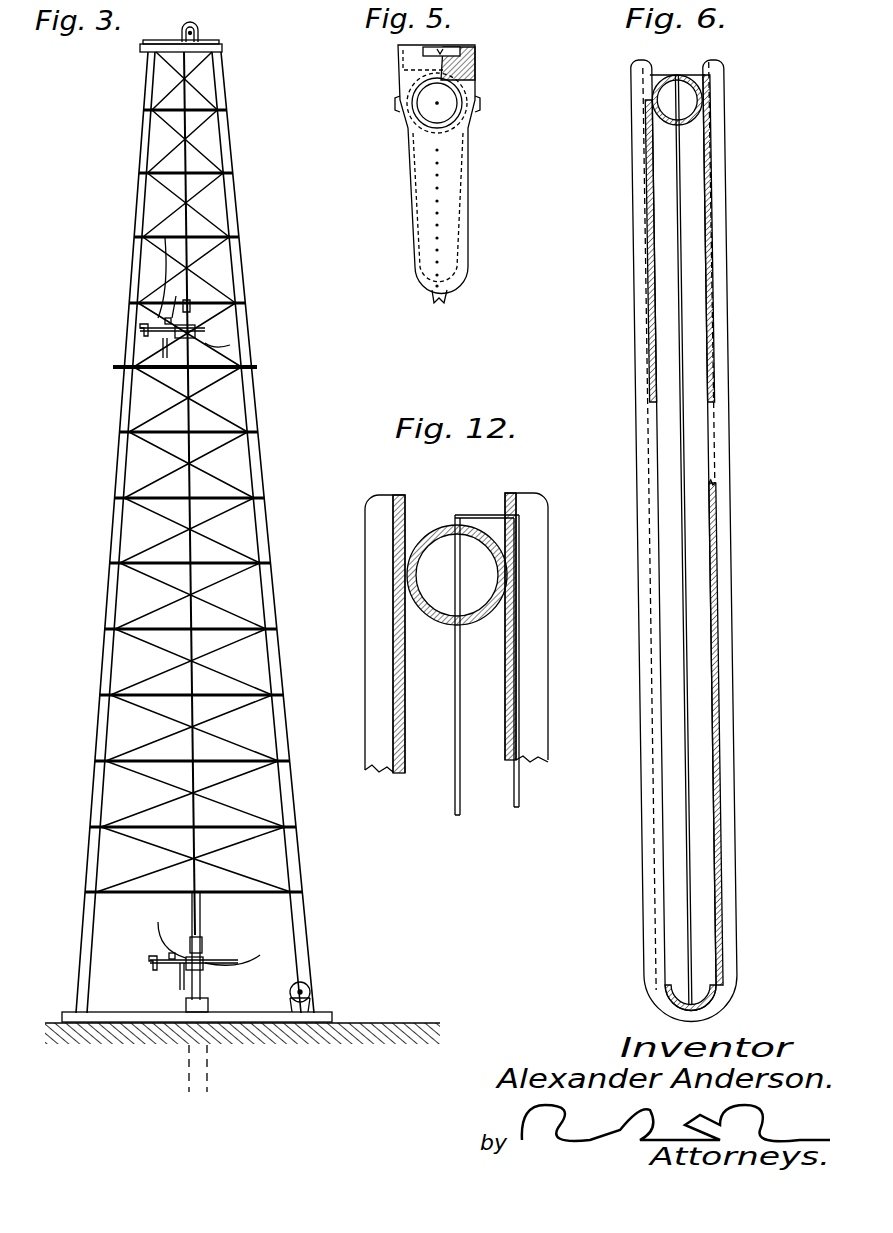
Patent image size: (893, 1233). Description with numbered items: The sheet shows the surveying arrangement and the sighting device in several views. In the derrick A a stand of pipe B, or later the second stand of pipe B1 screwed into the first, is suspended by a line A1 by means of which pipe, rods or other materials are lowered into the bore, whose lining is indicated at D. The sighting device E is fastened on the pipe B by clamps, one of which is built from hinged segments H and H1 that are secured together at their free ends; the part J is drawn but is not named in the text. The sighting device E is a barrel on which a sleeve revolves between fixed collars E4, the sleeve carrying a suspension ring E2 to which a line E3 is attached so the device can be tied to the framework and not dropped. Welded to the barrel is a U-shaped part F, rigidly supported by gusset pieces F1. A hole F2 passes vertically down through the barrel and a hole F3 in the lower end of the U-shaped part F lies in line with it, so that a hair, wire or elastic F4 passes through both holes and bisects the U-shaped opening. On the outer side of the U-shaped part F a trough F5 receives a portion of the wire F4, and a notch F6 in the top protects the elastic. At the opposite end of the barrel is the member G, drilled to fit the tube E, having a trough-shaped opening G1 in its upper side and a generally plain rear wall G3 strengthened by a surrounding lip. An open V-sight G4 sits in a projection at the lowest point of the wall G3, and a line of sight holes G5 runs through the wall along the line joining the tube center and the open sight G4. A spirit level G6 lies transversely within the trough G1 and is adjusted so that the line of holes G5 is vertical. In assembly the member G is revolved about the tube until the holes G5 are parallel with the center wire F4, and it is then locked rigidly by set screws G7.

In FIG. 3, the derrick A is at (252, 404).
In FIG. 3, the line A1 is at (183, 160).
In FIG. 3, the stand of pipe B is at (202, 980).
In FIG. 3, the second stand of pipe B1 is at (190, 482).
In FIG. 3, the lining of the bore hole D is at (210, 1002).
In FIG. 3, the sighting device E is at (207, 342).
In FIG. 5, the sighting device E is at (414, 90).
In FIG. 6, the sighting device E is at (690, 126).
In FIG. 12, the sighting device E is at (439, 616).
In FIG. 3, the suspension ring E2 is at (165, 320).
In FIG. 3, the line E3 is at (162, 272).
In FIG. 3, the collar E4 is at (190, 957).
In FIG. 3, the U-shaped part F is at (163, 352).
In FIG. 6, the U-shaped part F is at (645, 447).
In FIG. 6, the gusset pieces F1 is at (650, 206).
In FIG. 12, the gusset pieces F1 is at (506, 728).
In FIG. 12, the hole F2 is at (446, 527).
In FIG. 6, the hole F3 is at (676, 1003).
In FIG. 6, the wire or elastic F4 is at (680, 360).
In FIG. 12, the wire or elastic F4 is at (517, 797).
In FIG. 6, the trough F5 is at (728, 646).
In FIG. 12, the trough F5 is at (375, 680).
In FIG. 6, the notch F6 is at (716, 62).
In FIG. 12, the notch F6 is at (514, 506).
In FIG. 3, the member G is at (140, 330).
In FIG. 5, the member G is at (470, 176).
In FIG. 5, the trough-shaped opening G1 is at (470, 52).
In FIG. 5, the rear wall G3 is at (452, 237).
In FIG. 5, the open V-sight G4 is at (440, 304).
In FIG. 5, the sight holes G5 is at (434, 213).
In FIG. 5, the level G6 is at (448, 52).
In FIG. 5, the set screws G7 is at (396, 108).
In FIG. 3, the clamp segment H is at (193, 956).
In FIG. 3, the clamp segment H1 is at (198, 328).
In FIG. 3, the lever J is at (232, 346).